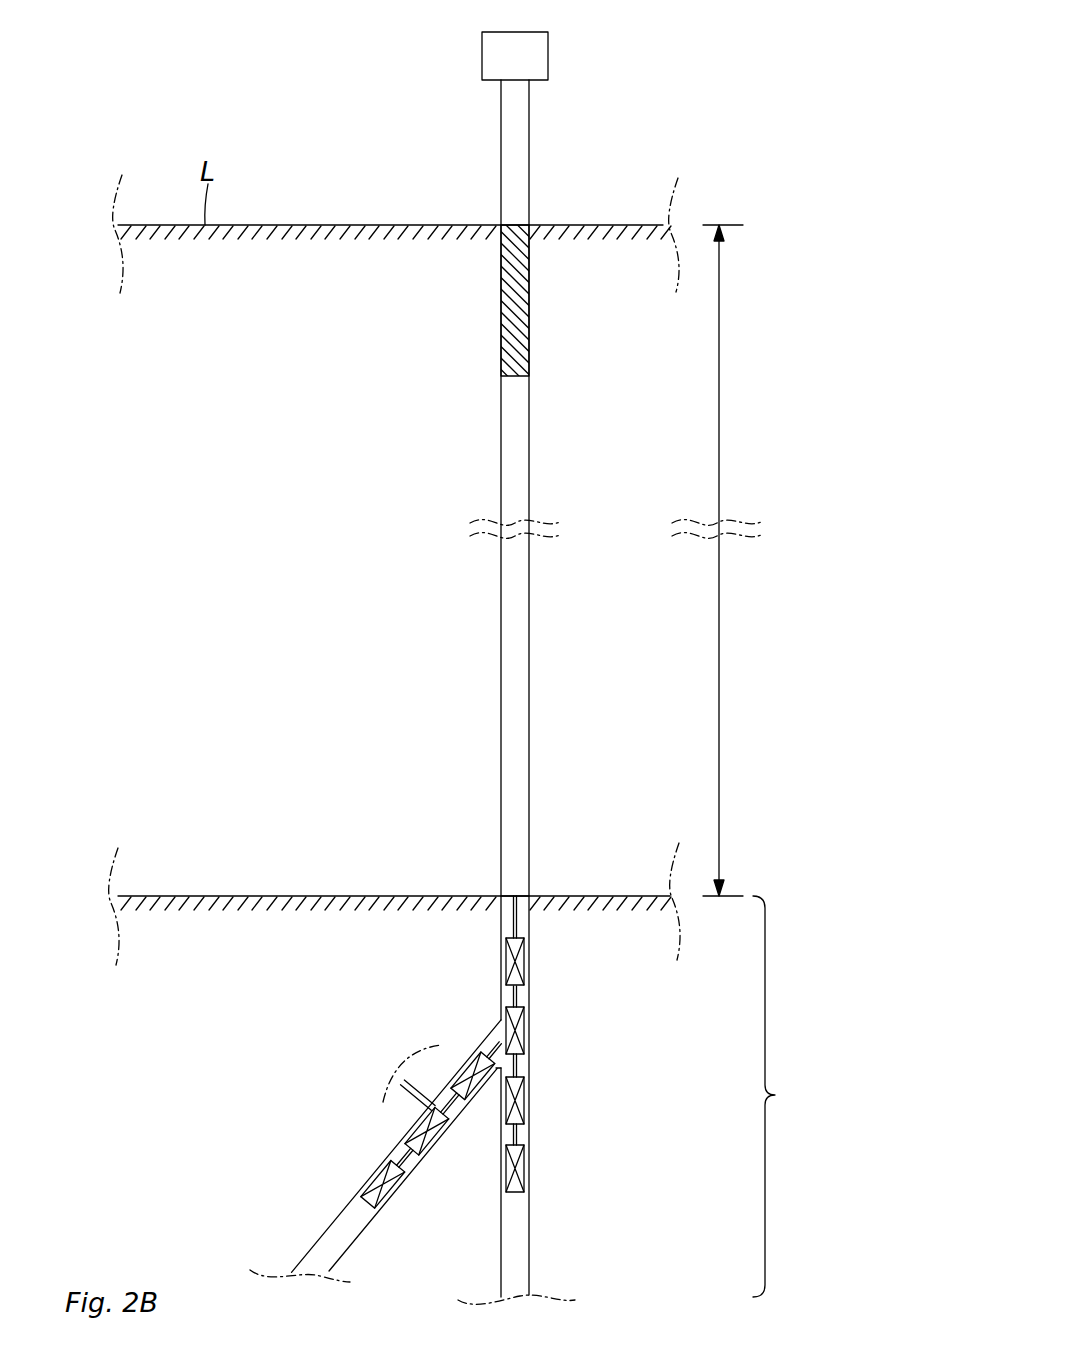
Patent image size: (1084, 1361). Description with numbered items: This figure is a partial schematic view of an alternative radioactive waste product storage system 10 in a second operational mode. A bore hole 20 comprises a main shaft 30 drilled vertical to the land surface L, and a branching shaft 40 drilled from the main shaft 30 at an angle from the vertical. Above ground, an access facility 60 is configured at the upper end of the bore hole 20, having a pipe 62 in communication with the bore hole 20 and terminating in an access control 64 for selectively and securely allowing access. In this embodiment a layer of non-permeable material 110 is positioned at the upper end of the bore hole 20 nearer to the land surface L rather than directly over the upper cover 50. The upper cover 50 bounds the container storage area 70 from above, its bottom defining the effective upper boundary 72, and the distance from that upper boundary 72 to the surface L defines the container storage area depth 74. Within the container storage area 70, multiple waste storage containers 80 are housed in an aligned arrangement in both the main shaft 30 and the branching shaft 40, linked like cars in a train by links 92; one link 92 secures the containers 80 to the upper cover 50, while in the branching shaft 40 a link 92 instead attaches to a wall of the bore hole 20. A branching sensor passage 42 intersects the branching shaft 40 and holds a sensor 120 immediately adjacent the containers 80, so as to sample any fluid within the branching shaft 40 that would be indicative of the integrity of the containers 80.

The system 10 is at (632, 48).
The bore hole 20 is at (414, 727).
The main shaft 30 is at (501, 617).
The branching shaft 40 is at (347, 1210).
The branching sensor passage 42 is at (411, 1103).
The upper cover 50 is at (509, 896).
The access facility 60 is at (505, 128).
The pipe 62 is at (501, 140).
The access control 64 is at (548, 60).
The container storage area 70 is at (787, 1096).
The upper boundary 72 is at (277, 896).
The container storage area depth 74 is at (720, 385).
The waste storage container 80 is at (529, 1040).
The link 92 is at (518, 918).
The non-permeable material 110 is at (501, 345).
The sensor 120 is at (435, 1090).